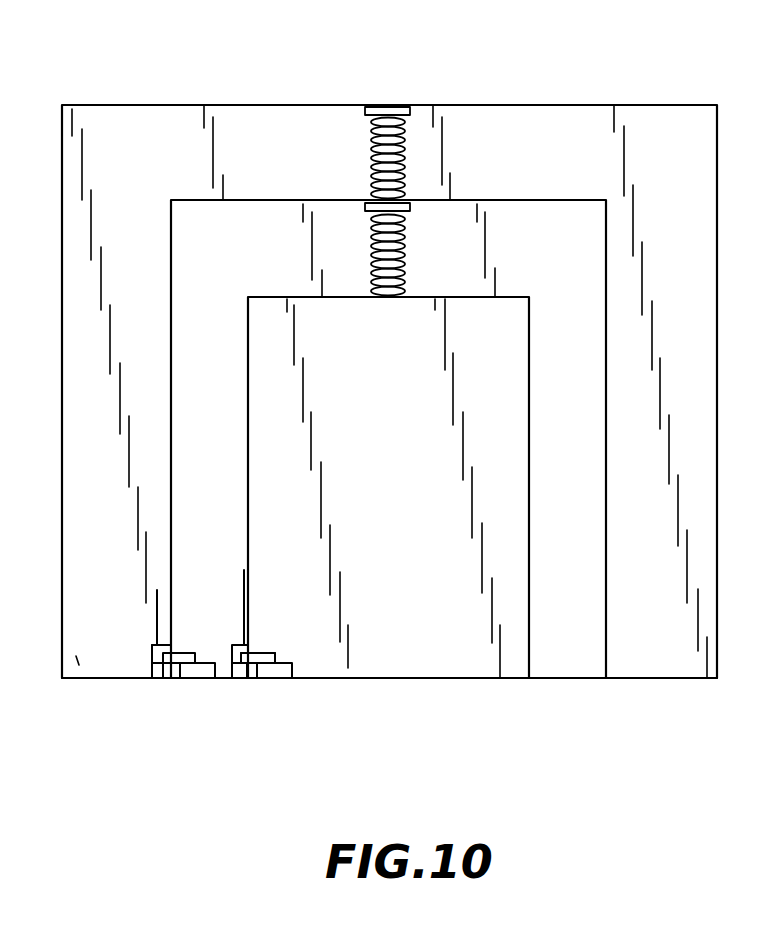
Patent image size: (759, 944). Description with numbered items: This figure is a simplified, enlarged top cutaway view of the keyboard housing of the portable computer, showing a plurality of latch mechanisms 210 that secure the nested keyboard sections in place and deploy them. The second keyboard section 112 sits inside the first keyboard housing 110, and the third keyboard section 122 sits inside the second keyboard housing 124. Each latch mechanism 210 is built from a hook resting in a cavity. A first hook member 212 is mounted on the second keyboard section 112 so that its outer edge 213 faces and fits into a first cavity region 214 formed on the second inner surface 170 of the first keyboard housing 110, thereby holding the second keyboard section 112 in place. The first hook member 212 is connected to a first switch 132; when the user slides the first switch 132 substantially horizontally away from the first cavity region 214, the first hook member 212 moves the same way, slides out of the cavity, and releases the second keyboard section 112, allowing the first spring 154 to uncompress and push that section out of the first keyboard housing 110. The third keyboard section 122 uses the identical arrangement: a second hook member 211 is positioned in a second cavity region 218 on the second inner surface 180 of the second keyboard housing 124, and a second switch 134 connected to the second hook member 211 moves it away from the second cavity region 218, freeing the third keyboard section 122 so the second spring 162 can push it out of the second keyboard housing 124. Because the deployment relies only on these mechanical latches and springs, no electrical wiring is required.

The first keyboard housing 110 is at (72, 679).
The second keyboard section 112 is at (563, 678).
The third keyboard section 122 is at (412, 668).
The second keyboard housing 124 is at (232, 679).
The first switch 132 is at (198, 679).
The second switch 134 is at (280, 679).
The first spring 154 is at (405, 165).
The second spring 162 is at (405, 262).
The second inner surface of the first keyboard housing 170 is at (192, 401).
The second inner surface of the second keyboard housing 180 is at (252, 370).
The latch mechanism 210 is at (193, 640).
The second hook member 211 is at (277, 653).
The first hook member 212 is at (185, 652).
The outer edge 213 is at (153, 679).
The first cavity region 214 is at (153, 644).
The second cavity region 218 is at (246, 635).